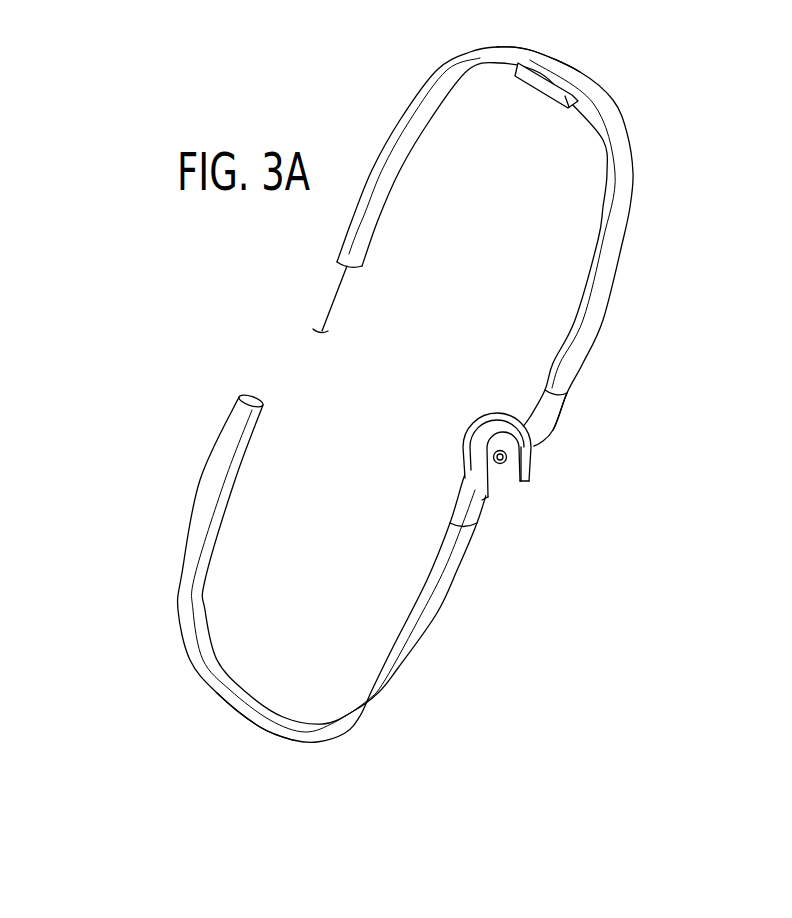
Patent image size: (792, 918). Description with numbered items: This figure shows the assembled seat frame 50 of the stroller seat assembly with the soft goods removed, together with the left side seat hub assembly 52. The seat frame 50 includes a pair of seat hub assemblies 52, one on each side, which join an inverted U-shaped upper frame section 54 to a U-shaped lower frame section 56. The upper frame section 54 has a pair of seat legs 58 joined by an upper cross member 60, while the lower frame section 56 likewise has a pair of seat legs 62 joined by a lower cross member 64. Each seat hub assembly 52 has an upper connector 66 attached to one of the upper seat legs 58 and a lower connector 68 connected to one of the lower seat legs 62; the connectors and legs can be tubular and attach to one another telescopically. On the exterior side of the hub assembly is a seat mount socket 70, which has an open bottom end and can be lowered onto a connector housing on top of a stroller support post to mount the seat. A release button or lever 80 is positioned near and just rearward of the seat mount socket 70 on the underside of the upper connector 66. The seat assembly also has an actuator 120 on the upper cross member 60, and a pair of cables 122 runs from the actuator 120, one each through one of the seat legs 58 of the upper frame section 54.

The seat frame 50 is at (714, 126).
The seat hub assembly 52 is at (554, 462).
The upper frame section 54 is at (659, 254).
The lower frame section 56 is at (505, 588).
The seat legs 58 is at (400, 170).
The upper cross member 60 is at (566, 69).
The seat legs 62 is at (233, 477).
The lower cross member 64 is at (262, 705).
The upper connector 66 is at (536, 424).
The lower connector 68 is at (436, 496).
The seat mount socket 70 is at (503, 478).
The release button or lever 80 is at (548, 438).
The actuator 120 is at (537, 95).
The cables 122 is at (333, 292).